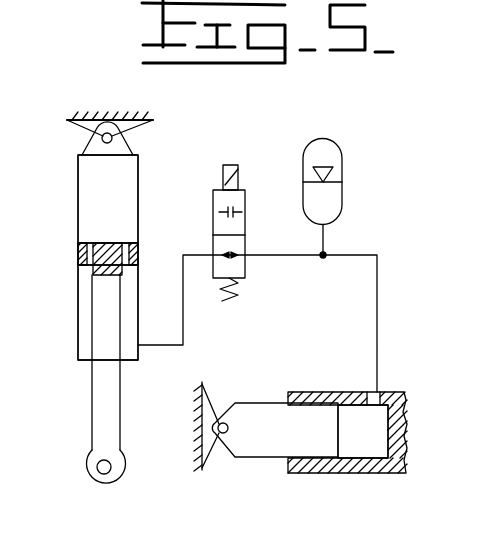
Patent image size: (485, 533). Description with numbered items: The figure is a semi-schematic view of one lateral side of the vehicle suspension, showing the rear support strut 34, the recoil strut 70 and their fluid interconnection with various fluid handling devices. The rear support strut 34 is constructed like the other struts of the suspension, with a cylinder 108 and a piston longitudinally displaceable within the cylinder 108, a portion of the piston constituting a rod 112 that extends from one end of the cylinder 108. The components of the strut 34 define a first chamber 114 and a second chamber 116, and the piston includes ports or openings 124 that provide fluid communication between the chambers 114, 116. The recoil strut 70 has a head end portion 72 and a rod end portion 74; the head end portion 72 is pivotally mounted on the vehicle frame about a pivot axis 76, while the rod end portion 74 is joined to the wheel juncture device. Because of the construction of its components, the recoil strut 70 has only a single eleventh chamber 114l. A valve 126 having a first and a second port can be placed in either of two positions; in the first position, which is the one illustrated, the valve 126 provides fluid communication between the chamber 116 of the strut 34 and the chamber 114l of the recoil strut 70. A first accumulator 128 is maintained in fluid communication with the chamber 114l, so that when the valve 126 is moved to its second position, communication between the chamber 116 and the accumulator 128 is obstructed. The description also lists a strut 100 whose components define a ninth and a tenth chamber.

The rear support strut 34 is at (68, 211).
The recoil strut 70 is at (264, 464).
The head end portion 72 is at (333, 398).
The rod end portion 74 is at (276, 414).
The pivot axis 76 is at (223, 434).
The strut 100 is at (105, 258).
The cylinder 108 is at (138, 165).
The rod 112 is at (105, 404).
The first chamber 114 is at (122, 189).
The eleventh chamber 114l is at (382, 446).
The second chamber 116 is at (125, 330).
The ports or openings 124 is at (130, 242).
The valve 126 is at (245, 197).
The first accumulator 128 is at (337, 142).